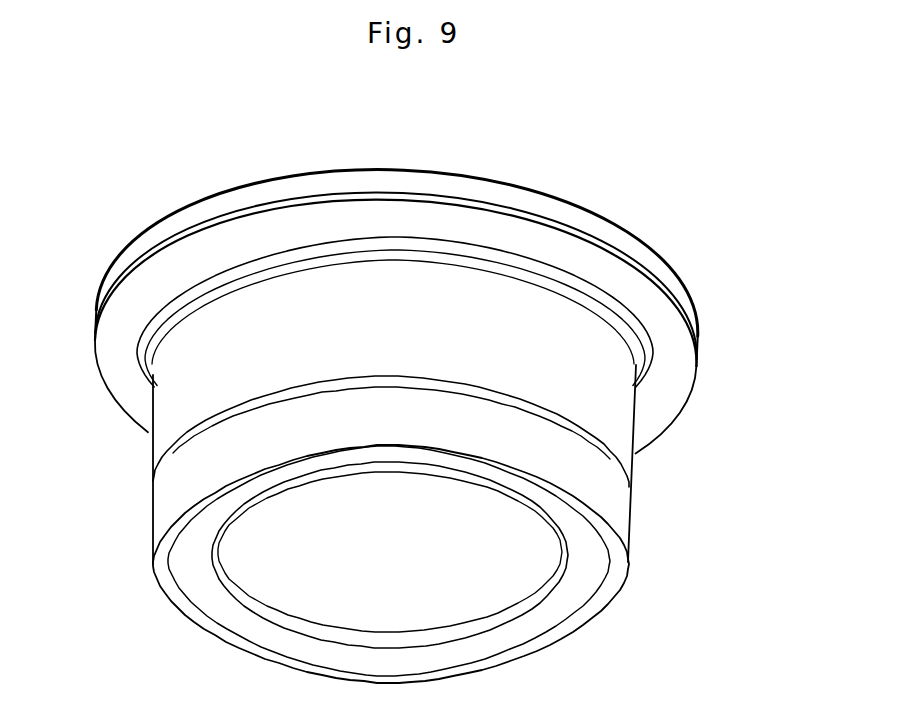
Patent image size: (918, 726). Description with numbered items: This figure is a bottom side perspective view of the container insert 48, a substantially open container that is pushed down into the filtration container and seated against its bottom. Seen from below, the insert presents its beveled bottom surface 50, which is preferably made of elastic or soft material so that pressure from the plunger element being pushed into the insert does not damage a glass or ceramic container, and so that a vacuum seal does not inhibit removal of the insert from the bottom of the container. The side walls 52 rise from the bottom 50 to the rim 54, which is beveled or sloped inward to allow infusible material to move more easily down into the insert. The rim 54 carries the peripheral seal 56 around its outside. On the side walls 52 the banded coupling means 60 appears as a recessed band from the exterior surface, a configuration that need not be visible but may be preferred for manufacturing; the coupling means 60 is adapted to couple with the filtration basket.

The container insert 48 is at (607, 146).
The bottom 50 is at (218, 610).
The side walls 52 is at (153, 438).
The rim 54 is at (647, 358).
The peripheral sealing means 56 is at (680, 283).
The coupling means 60 is at (628, 483).